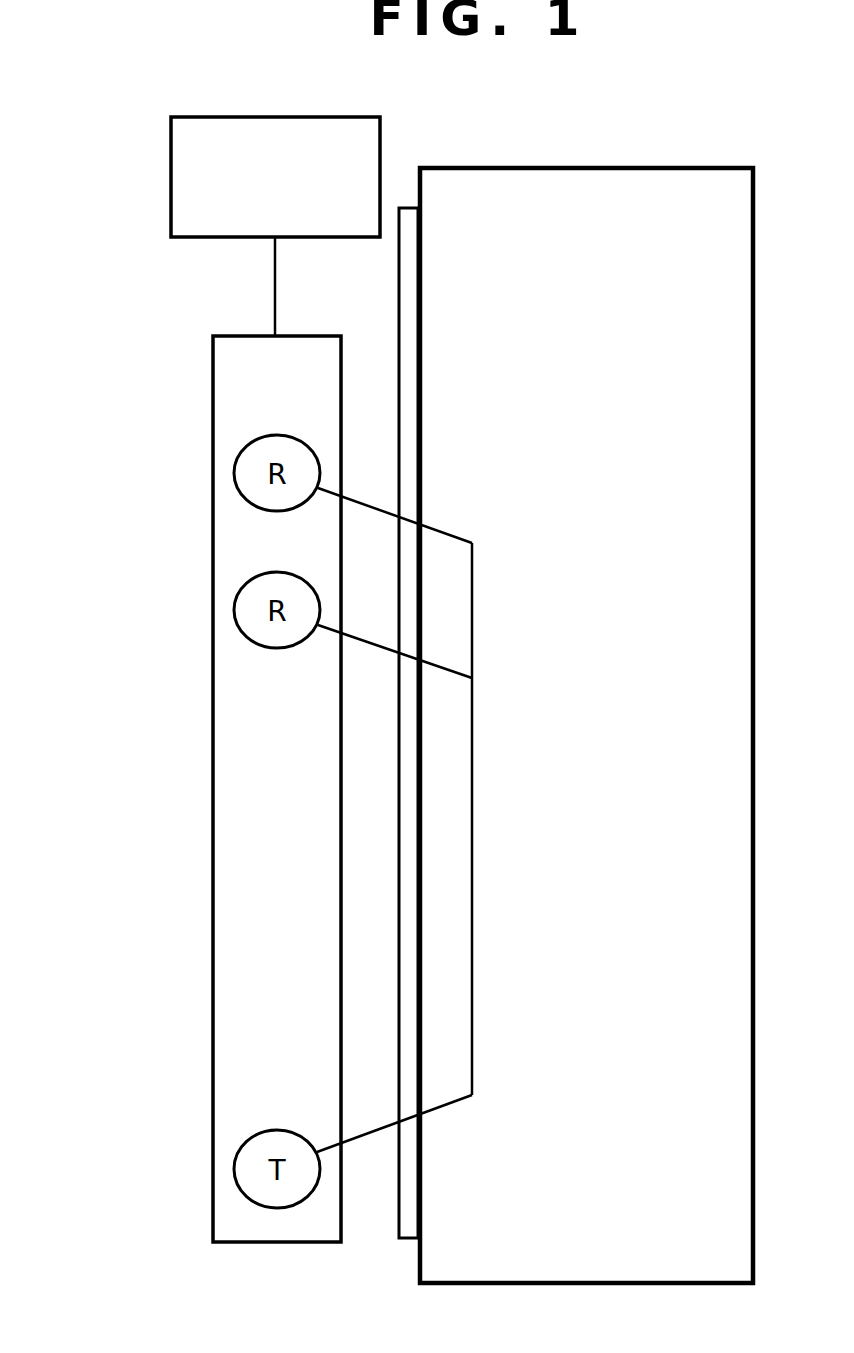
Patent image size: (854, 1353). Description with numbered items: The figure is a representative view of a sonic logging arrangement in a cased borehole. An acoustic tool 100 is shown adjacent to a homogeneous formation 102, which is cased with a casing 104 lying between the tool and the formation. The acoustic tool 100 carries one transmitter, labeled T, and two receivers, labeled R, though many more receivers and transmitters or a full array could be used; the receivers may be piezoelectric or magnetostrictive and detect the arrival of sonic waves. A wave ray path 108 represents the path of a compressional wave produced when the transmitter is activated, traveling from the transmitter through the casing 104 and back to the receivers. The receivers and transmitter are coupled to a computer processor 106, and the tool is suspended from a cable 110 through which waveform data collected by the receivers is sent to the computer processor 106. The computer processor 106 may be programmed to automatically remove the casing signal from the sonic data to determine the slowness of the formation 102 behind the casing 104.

The acoustic tool 100 is at (212, 392).
The homogeneous formation 102 is at (622, 360).
The casing 104 is at (412, 198).
The computer processor 106 is at (171, 140).
The wave ray path 108 is at (473, 878).
The cable 110 is at (275, 288).